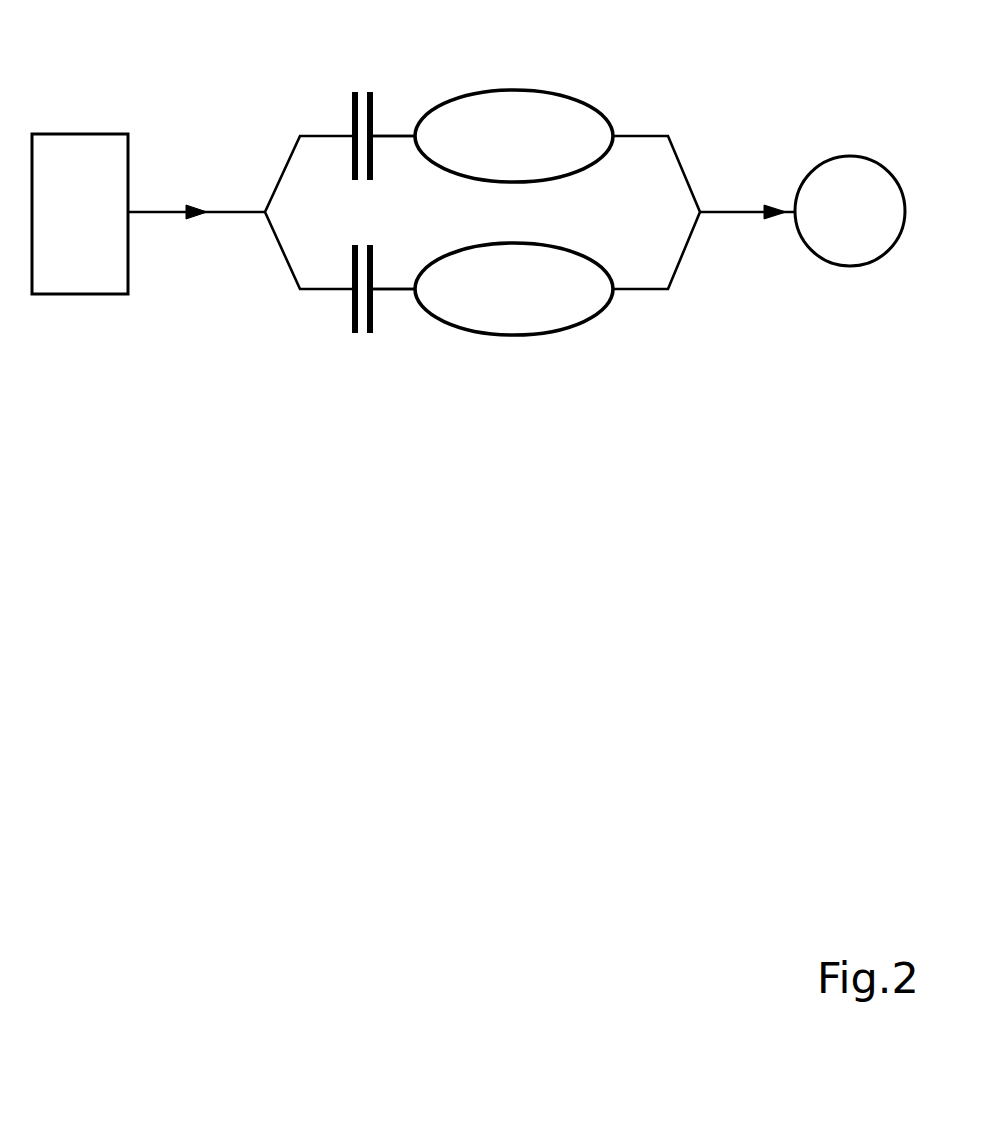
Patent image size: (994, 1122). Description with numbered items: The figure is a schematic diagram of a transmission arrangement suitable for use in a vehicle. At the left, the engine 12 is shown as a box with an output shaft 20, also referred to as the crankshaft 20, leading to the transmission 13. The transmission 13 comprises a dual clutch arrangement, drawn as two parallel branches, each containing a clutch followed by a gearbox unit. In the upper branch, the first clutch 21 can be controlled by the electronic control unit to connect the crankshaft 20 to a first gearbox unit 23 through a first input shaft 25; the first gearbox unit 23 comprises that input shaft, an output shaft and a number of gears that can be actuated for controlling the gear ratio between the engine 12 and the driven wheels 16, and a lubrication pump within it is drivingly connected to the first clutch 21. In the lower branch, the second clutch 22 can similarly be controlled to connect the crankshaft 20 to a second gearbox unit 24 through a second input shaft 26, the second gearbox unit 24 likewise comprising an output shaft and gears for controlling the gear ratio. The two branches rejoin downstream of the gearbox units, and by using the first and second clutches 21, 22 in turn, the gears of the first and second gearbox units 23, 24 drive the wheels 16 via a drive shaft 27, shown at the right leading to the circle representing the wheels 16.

The engine 12 is at (79, 134).
The transmission 13 is at (674, 99).
The driven wheels 16 is at (851, 156).
The output shaft 20 is at (153, 212).
The first clutch 21 is at (352, 113).
The second clutch 22 is at (352, 311).
The first gearbox unit 23 is at (540, 91).
The second gearbox unit 24 is at (527, 334).
The first input shaft 25 is at (392, 135).
The second input shaft 26 is at (392, 290).
The drive shaft 27 is at (735, 212).